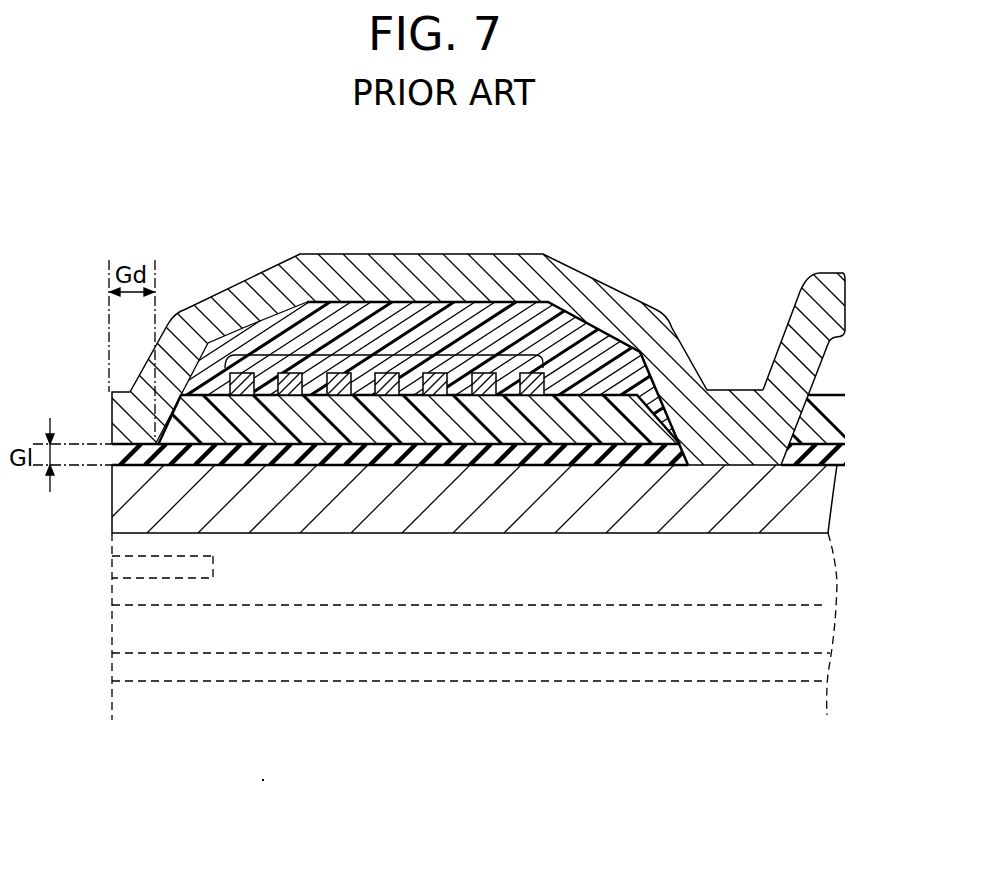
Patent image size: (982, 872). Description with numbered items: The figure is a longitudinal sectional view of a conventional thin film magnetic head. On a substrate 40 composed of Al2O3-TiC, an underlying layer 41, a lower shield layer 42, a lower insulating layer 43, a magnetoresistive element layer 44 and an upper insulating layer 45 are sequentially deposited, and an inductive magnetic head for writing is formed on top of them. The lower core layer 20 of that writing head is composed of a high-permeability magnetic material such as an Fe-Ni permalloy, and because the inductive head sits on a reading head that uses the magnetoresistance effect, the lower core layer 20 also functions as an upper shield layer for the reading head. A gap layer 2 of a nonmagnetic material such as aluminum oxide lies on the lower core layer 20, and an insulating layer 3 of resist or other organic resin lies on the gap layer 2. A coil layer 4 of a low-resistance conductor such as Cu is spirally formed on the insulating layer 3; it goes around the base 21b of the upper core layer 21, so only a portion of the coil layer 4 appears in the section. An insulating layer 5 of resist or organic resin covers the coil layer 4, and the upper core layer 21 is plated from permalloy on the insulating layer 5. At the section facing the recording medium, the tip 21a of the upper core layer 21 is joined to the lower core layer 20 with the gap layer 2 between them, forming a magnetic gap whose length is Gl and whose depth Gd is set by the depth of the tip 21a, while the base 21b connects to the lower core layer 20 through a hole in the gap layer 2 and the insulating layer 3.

The gap layer 2 is at (140, 458).
The insulating layer 3 is at (620, 413).
The coil layer 4 is at (380, 355).
The insulating layer 5 is at (470, 330).
The lower core layer 20 is at (807, 500).
The upper core layer 21 is at (553, 290).
The tip 21a is at (120, 406).
The base 21b is at (733, 405).
The substrate 40 is at (133, 702).
The underlying layer 41 is at (145, 667).
The lower shield layer 42 is at (133, 633).
The lower insulating layer 43 is at (145, 595).
The magnetoresistive element layer 44 is at (138, 570).
The upper insulating layer 45 is at (153, 547).